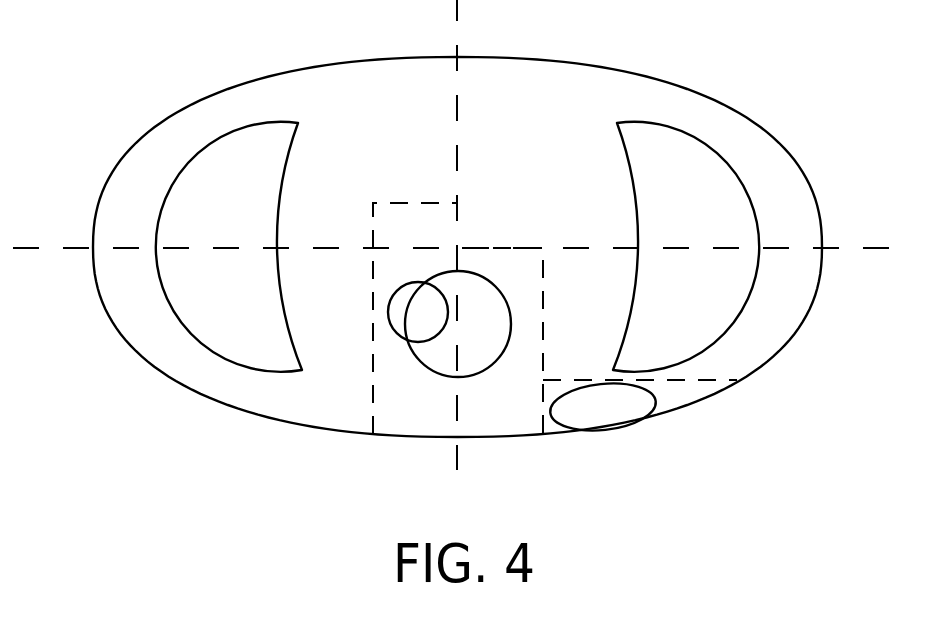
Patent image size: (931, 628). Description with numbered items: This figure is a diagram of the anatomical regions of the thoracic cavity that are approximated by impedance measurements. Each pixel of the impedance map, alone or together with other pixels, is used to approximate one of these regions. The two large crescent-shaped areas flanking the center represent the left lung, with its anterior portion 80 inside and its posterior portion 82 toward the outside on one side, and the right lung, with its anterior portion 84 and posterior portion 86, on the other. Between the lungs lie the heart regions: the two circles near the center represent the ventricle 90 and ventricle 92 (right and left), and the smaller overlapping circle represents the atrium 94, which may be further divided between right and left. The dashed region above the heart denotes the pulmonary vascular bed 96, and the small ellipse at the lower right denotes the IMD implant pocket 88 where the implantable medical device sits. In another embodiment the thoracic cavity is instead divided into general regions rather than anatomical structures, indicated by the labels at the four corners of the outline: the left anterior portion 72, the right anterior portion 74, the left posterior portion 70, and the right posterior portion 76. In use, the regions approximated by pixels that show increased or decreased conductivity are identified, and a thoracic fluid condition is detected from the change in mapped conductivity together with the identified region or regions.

The left posterior portion 70 is at (262, 478).
The left anterior portion 72 is at (262, 42).
The right anterior portion 74 is at (804, 42).
The right posterior portion 76 is at (804, 478).
The left lung anterior portion 80 is at (350, 328).
The left lung posterior portion 82 is at (361, 172).
The right lung anterior portion 84 is at (773, 340).
The right lung posterior portion 86 is at (563, 146).
The IMD implant pocket 88 is at (691, 406).
The ventricle 90 is at (437, 406).
The ventricle 92 is at (522, 406).
The atrium 94 is at (435, 324).
The pulmonary vascular bed 96 is at (428, 238).